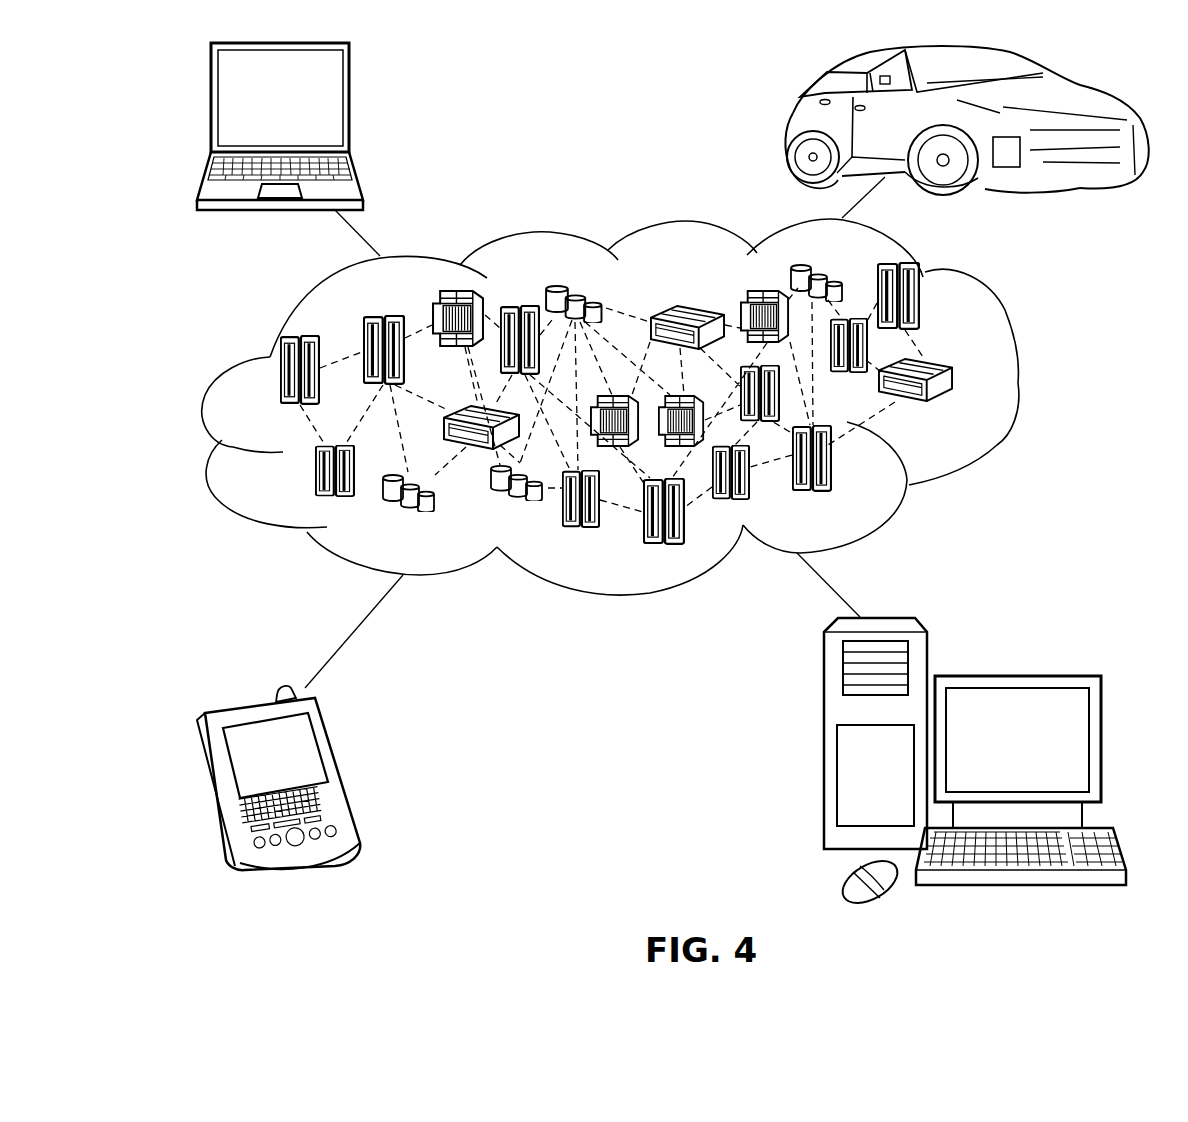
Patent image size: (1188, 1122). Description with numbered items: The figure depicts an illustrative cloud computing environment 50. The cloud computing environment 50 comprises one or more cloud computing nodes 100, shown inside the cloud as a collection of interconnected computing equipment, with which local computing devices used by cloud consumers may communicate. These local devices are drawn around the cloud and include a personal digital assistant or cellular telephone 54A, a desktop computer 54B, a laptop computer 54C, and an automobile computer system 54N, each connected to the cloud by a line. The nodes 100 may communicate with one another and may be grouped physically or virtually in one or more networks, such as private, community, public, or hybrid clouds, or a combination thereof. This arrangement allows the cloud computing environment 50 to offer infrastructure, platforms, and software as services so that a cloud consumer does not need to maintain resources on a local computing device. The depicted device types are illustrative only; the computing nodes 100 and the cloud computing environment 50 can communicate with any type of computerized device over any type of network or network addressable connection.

The laptop computer 54C is at (351, 103).
The automobile computer system 54N is at (791, 121).
The personal digital assistant (PDA) or cellular telephone 54A is at (342, 770).
The desktop computer 54B is at (1012, 676).
The cloud computing environment 50 is at (1018, 383).
The cloud computing nodes 100 is at (958, 413).